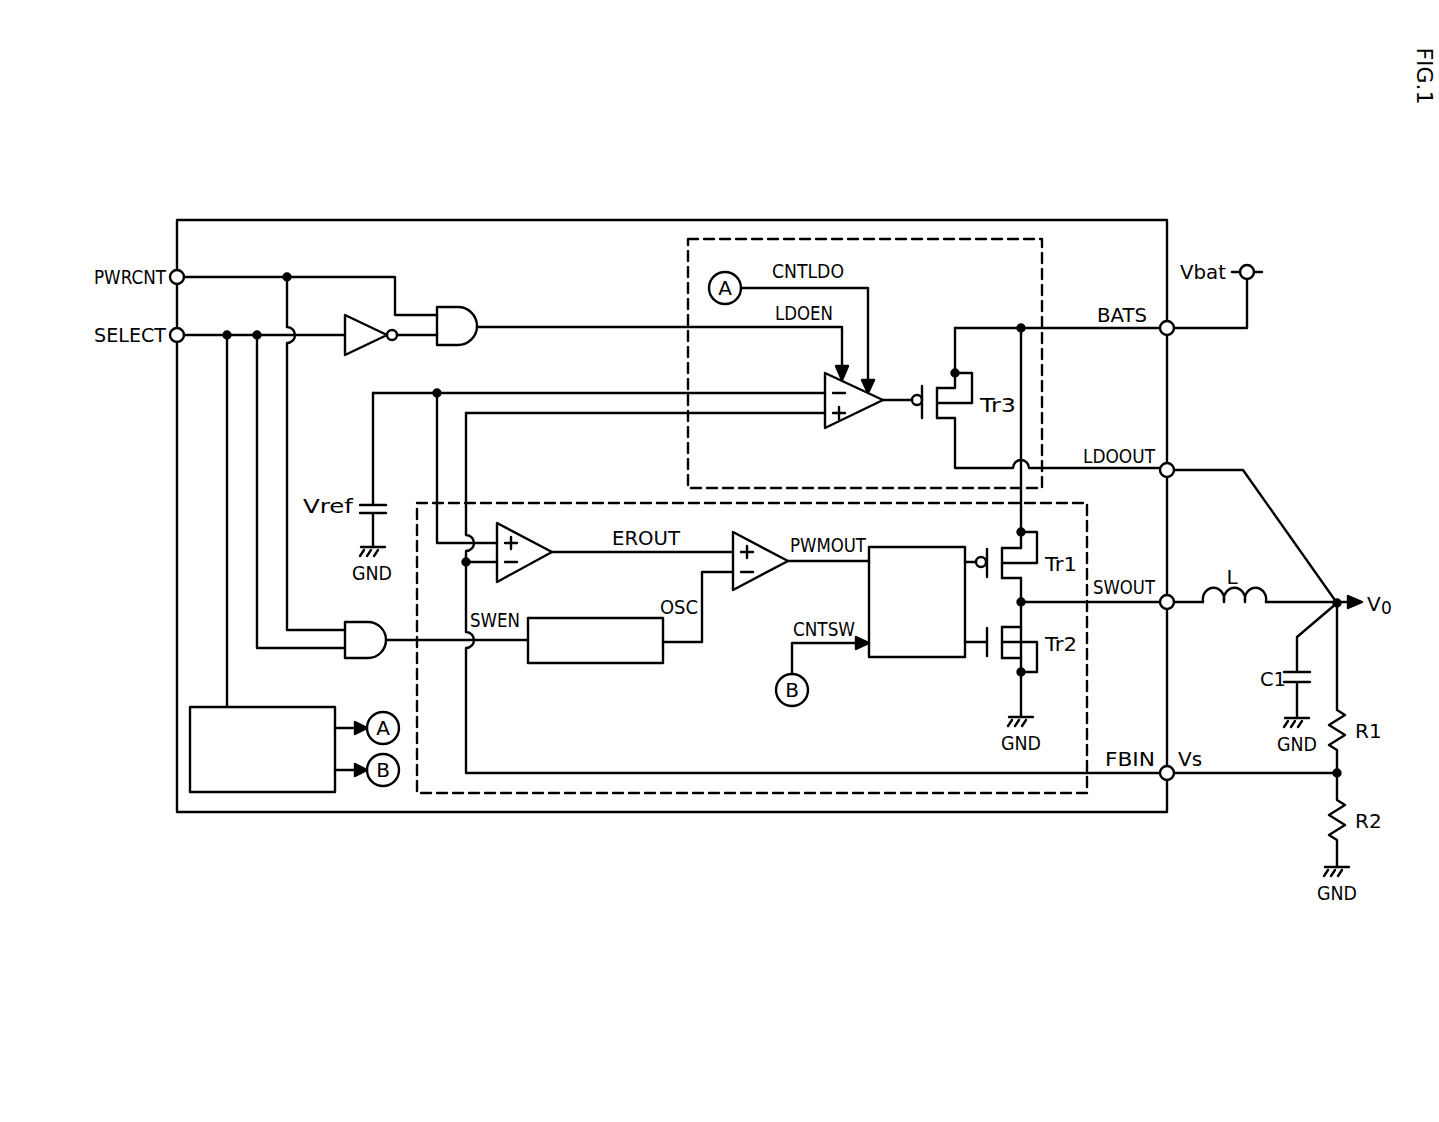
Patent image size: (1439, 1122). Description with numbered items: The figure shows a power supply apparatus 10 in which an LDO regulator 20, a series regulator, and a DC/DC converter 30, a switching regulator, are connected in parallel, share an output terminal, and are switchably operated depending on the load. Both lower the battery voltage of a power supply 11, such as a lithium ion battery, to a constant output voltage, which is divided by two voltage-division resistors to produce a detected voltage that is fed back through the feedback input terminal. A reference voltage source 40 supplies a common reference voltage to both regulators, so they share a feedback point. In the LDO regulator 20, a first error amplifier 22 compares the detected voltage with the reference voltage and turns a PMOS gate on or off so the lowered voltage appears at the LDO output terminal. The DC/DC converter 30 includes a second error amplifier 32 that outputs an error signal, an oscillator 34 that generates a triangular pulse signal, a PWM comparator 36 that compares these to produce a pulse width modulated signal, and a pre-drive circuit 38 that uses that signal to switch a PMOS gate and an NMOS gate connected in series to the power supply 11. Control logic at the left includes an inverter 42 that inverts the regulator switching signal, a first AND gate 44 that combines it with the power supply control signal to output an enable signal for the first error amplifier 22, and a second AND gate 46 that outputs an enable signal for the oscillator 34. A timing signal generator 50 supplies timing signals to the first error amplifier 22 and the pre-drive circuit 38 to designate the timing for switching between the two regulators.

The power supply apparatus 10 is at (672, 219).
The power supply 11 is at (1250, 263).
The LDO regulator 20 is at (1045, 360).
The first error amplifier 22 is at (862, 428).
The DC/DC converter 30 is at (1090, 652).
The second error amplifier 32 is at (532, 572).
The oscillator 34 is at (597, 665).
The PWM comparator 36 is at (760, 580).
The pre-drive circuit 38 is at (912, 658).
The reference voltage source 40 is at (378, 500).
The inverter 42 is at (368, 352).
The first AND gate 44 is at (448, 305).
The second AND gate 46 is at (352, 621).
The timing signal generator 50 is at (304, 706).